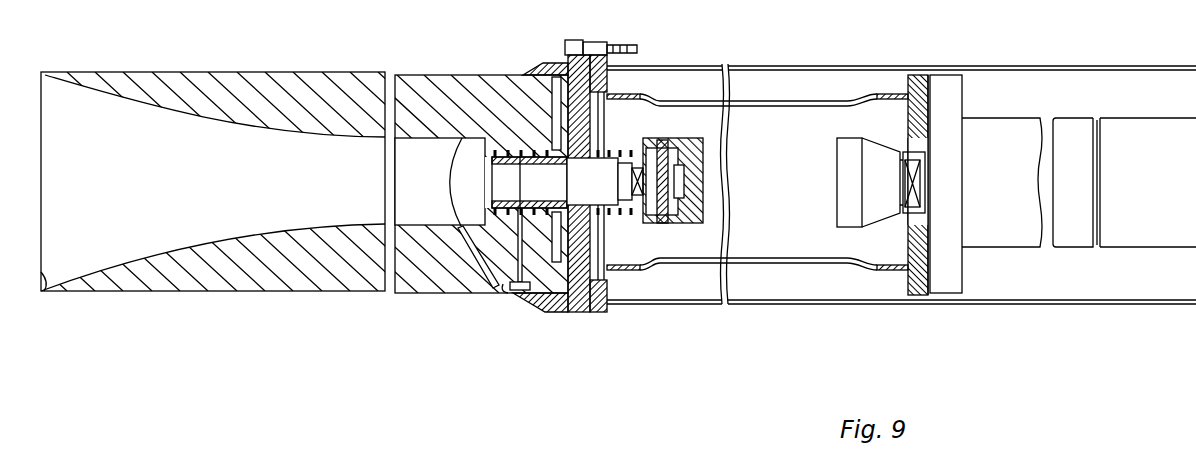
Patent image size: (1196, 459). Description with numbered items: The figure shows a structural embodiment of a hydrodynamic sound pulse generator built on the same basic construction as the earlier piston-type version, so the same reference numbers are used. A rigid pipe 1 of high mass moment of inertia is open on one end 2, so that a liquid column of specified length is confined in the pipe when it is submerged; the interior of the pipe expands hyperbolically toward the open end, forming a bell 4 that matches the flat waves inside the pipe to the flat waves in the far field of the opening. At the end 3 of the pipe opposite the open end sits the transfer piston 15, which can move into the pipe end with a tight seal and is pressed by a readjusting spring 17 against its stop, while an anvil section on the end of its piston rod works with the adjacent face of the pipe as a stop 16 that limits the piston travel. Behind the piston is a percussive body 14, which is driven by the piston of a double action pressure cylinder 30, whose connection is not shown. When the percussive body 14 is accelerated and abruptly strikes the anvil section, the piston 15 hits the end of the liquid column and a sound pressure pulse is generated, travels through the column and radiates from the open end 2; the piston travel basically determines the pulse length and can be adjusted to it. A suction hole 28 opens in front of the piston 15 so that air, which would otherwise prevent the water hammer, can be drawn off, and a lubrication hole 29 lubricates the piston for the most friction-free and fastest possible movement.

The pipe 1 is at (341, 212).
The open end of the pipe 2 is at (48, 285).
The bell 4 is at (186, 240).
The end of the pipe opposite the open end 3 is at (418, 217).
The transfer piston 15 is at (468, 150).
The suction hole 28 is at (469, 255).
The lubrication hole 29 is at (503, 290).
The stop 16 is at (652, 137).
The readjusting spring 17 is at (628, 212).
The percussive body 14 is at (850, 220).
The double action pressure cylinder 30 is at (1001, 235).